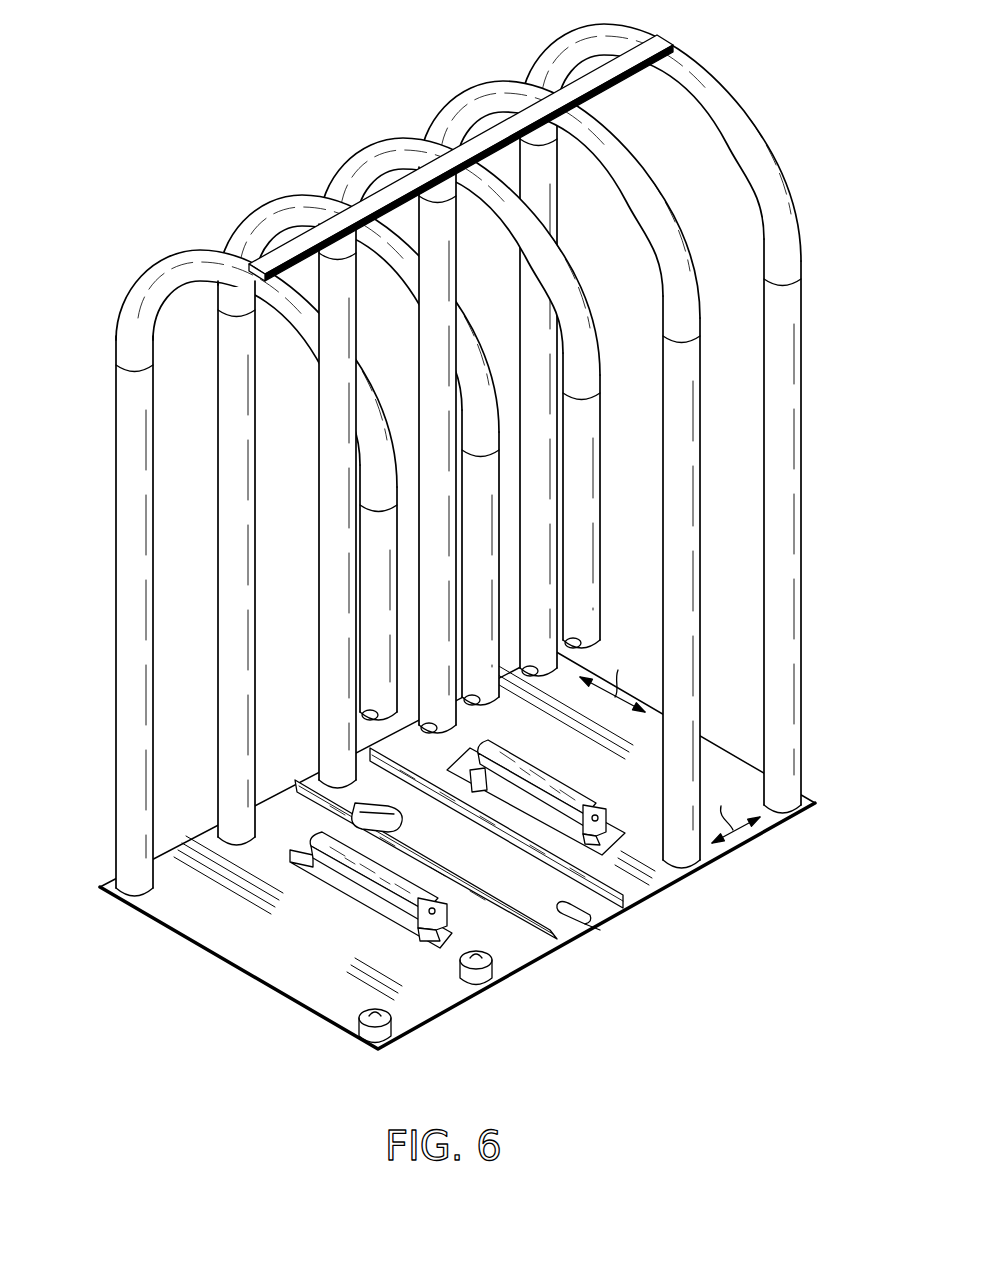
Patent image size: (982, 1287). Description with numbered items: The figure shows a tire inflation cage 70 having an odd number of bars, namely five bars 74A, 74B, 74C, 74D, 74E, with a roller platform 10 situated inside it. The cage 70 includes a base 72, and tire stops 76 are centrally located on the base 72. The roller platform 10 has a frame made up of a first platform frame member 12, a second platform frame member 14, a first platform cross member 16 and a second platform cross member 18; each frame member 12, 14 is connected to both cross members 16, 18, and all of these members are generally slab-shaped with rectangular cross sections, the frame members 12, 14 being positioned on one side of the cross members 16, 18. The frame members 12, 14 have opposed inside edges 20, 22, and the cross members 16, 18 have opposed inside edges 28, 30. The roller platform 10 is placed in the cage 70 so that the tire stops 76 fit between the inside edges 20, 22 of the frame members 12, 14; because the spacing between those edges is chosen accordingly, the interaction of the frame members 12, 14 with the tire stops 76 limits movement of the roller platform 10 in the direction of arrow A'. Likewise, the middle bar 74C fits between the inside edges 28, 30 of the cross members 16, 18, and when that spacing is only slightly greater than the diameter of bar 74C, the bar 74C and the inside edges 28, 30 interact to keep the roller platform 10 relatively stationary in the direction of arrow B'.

The roller platform 10 is at (497, 857).
The first platform frame member 12 is at (352, 781).
The second platform frame member 14 is at (627, 826).
The first platform cross member 16 is at (443, 864).
The second platform cross member 18 is at (490, 836).
The inside edge 20 is at (372, 817).
The inside edge 22 is at (513, 873).
The inside edge 28 is at (592, 930).
The inside edge 30 is at (608, 923).
The tire inflation cage 70 is at (466, 542).
The base 72 is at (240, 929).
The bar 74A is at (132, 720).
The bar 74B is at (240, 659).
The bar 74C is at (332, 622).
The bar 74D is at (697, 563).
The bar 74E is at (800, 367).
The tire stops 76 is at (473, 777).